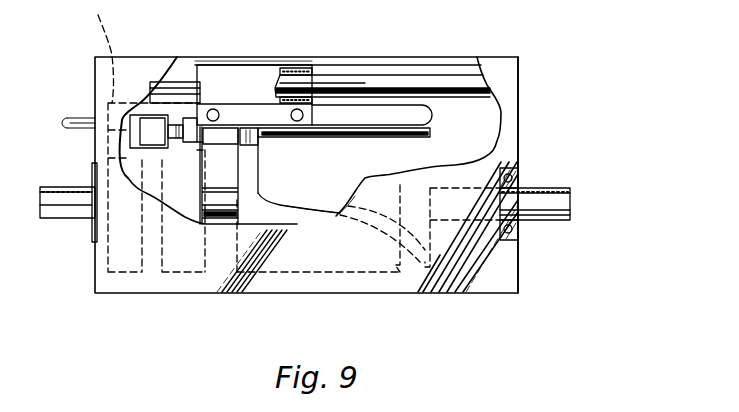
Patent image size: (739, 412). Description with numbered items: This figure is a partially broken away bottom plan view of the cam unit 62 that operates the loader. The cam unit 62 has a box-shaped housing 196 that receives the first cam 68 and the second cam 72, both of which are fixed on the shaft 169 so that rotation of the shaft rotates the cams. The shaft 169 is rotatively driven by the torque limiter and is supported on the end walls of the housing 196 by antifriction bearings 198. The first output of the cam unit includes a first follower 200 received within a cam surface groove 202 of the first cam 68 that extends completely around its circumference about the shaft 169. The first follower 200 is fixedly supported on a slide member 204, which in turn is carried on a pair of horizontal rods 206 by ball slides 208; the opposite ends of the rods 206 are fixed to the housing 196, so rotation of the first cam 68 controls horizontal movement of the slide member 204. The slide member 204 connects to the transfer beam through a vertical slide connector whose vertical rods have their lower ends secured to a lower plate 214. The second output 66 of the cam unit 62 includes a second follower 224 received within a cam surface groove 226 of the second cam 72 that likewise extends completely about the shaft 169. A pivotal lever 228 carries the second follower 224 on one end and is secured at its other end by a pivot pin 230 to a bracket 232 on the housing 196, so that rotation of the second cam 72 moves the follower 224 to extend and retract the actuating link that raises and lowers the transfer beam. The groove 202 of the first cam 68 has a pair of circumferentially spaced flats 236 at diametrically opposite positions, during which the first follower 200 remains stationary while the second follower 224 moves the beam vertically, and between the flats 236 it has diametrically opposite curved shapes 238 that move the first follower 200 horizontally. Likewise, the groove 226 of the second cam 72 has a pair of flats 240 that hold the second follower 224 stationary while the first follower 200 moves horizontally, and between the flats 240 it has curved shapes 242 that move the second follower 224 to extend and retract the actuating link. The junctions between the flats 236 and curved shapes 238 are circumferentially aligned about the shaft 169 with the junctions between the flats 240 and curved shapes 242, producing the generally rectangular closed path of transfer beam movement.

The cam unit 62 is at (466, 296).
The second output 66 is at (173, 82).
The first cam 68 is at (433, 133).
The second cam 72 is at (210, 139).
The shaft 169 is at (553, 208).
The housing 196 is at (510, 87).
The antifriction bearings 198 is at (92, 237).
The first follower 200 is at (257, 138).
The cam surface groove 202 is at (267, 184).
The slide member 204 is at (222, 70).
The horizontal rods 206 is at (338, 80).
The ball slides 208 is at (307, 70).
The lower plate 214 is at (260, 106).
The second follower 224 is at (220, 175).
The cam surface groove 226 is at (153, 180).
The pivotal lever 228 is at (153, 127).
The pivot pin 230 is at (187, 120).
The bracket 232 is at (103, 66).
The flats 236 is at (262, 178).
The curved shapes 238 is at (312, 218).
The flats 240 is at (150, 292).
The curved shapes 242 is at (200, 140).